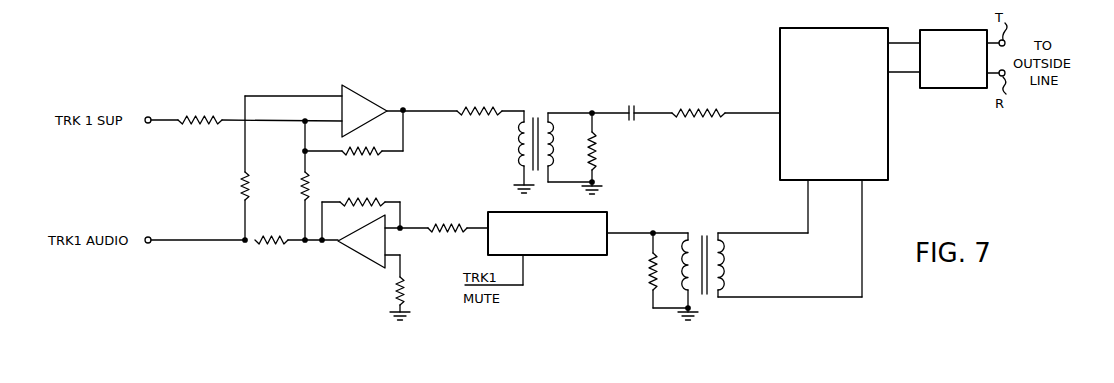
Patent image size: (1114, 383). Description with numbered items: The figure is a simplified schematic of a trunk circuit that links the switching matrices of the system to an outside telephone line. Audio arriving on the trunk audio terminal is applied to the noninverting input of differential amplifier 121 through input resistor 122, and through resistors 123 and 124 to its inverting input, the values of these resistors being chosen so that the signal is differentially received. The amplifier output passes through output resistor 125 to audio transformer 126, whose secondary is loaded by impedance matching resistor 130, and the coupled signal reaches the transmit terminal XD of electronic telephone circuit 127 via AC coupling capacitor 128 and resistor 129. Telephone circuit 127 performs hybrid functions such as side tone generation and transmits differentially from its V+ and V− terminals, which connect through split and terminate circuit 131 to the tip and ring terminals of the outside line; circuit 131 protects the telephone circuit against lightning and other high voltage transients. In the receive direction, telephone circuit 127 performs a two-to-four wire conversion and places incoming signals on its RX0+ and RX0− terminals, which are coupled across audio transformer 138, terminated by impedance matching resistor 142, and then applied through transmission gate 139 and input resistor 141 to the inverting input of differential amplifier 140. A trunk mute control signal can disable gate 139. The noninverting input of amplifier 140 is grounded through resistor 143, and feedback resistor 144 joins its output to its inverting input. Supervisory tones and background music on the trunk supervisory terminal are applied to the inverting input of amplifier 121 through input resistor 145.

The differential amplifier 121 is at (363, 91).
The input resistor 122 is at (241, 181).
The resistor 123 is at (270, 247).
The resistor 124 is at (303, 174).
The output resistor 125 is at (466, 106).
The audio transformer 126 is at (536, 112).
The electronic telephone circuit 127 is at (818, 28).
The AC coupling capacitor 128 is at (631, 105).
The resistor 129 is at (701, 80).
The impedance matching resistor 130 is at (596, 158).
The split and terminate circuit 131 is at (946, 30).
The audio transformer 138 is at (710, 220).
The transmission gate 139 is at (604, 213).
The differential amplifier 140 is at (346, 250).
The input resistor 141 is at (461, 223).
The impedance matching resistor 142 is at (648, 261).
The resistor 143 is at (397, 288).
The feedback resistor 144 is at (371, 198).
The input resistor 145 is at (214, 115).